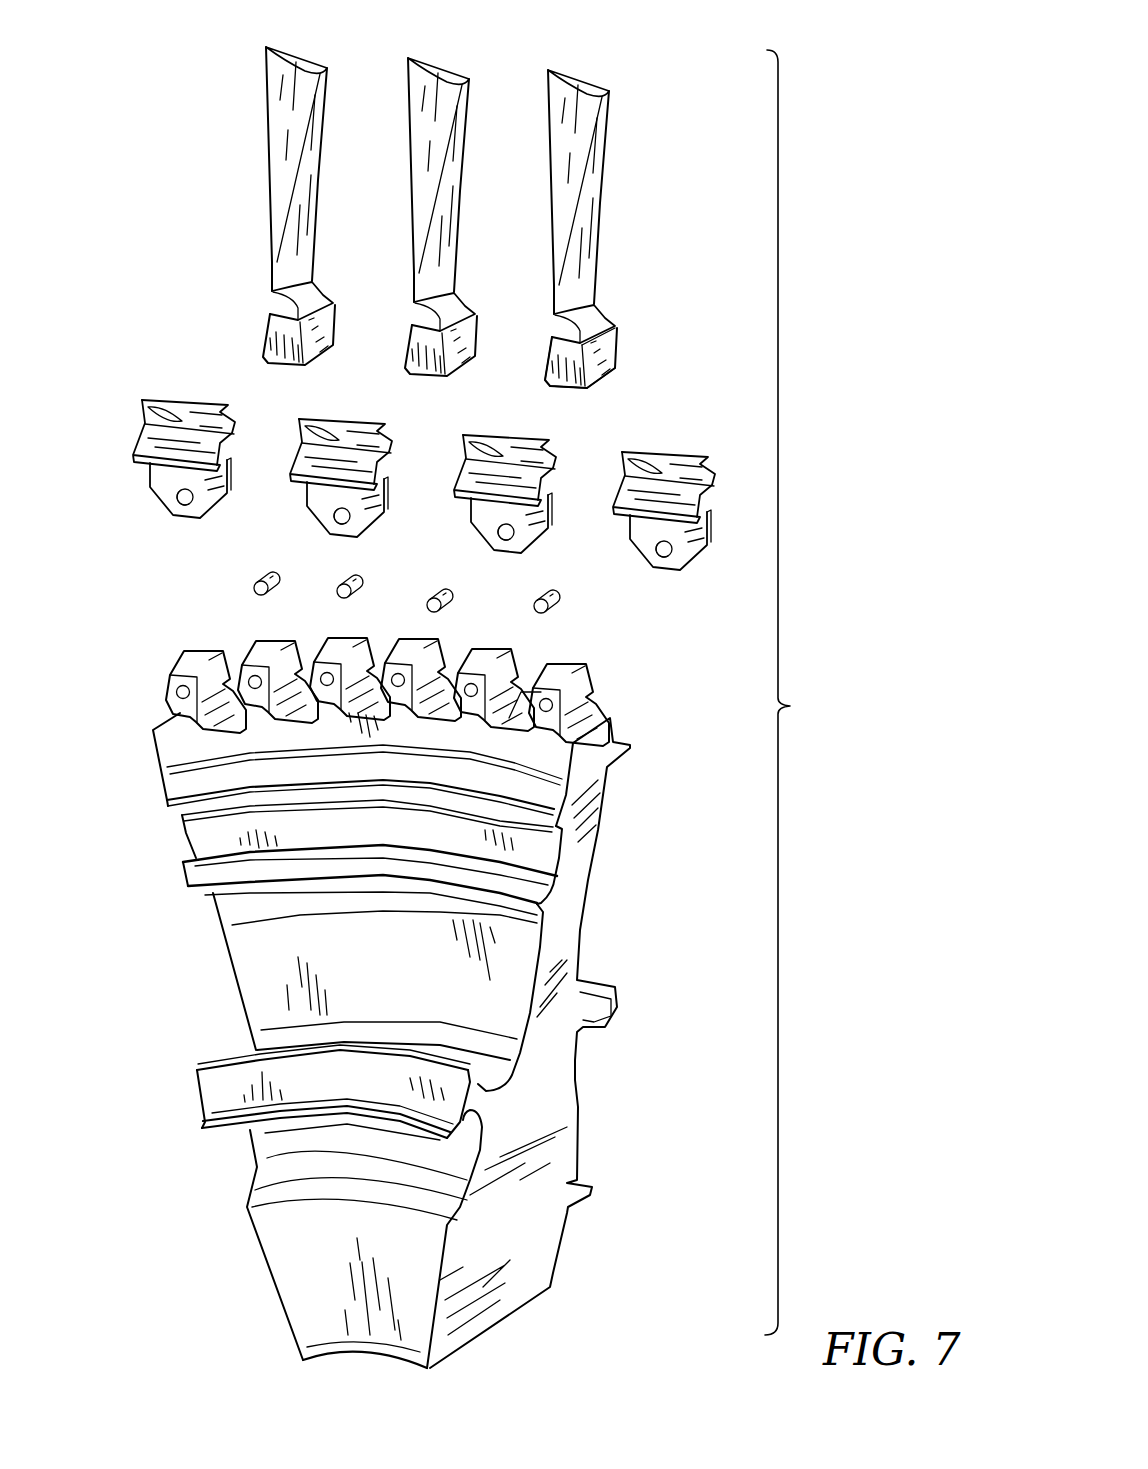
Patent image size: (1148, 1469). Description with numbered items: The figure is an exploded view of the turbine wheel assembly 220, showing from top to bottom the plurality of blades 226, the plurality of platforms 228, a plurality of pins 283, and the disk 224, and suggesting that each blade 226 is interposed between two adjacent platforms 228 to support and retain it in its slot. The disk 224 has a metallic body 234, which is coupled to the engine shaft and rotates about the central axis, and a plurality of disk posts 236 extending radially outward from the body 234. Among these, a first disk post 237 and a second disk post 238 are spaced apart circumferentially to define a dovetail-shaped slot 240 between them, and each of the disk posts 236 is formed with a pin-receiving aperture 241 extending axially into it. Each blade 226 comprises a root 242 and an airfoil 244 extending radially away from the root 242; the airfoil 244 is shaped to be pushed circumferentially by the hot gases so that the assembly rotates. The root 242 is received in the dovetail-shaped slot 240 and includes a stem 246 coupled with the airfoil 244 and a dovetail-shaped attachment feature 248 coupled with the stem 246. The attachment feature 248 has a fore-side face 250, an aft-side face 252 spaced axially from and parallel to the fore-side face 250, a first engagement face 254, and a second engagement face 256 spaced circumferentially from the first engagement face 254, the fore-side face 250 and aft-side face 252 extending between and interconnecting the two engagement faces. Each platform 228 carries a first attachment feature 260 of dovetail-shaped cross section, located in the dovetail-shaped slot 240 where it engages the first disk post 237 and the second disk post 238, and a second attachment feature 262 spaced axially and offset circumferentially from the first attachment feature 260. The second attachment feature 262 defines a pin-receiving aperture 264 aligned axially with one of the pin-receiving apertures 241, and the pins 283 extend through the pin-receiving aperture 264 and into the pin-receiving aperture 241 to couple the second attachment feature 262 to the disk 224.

The turbine wheel assembly 220 is at (167, 83).
The disk 224 is at (97, 757).
The blades 226 is at (265, 140).
The platforms 228 is at (113, 387).
The body 234 is at (581, 855).
The disk posts 236 is at (672, 700).
The first disk post 237 is at (489, 648).
The second disk post 238 is at (566, 662).
The dovetail-shaped slot 240 is at (530, 660).
The pin-receiving aperture 241 is at (544, 728).
The root 242 is at (688, 288).
The airfoil 244 is at (637, 200).
The stem 246 is at (615, 312).
The attachment feature 248 is at (675, 360).
The fore-side face 250 is at (565, 370).
The aft-side face 252 is at (613, 347).
The first engagement face 254 is at (603, 358).
The second engagement face 256 is at (547, 362).
The first attachment feature 260 is at (607, 493).
The second attachment feature 262 is at (713, 520).
The pin-receiving aperture 264 is at (510, 542).
The pins 283 is at (440, 582).